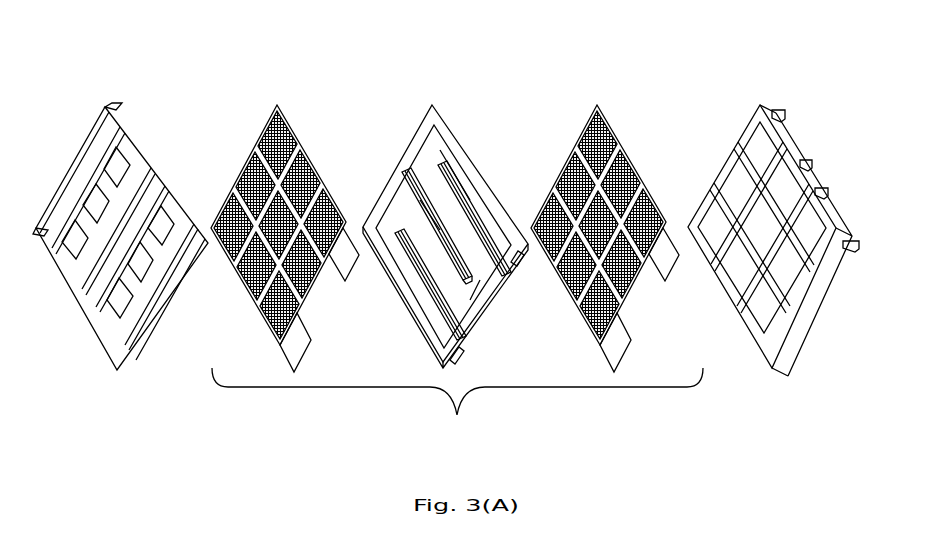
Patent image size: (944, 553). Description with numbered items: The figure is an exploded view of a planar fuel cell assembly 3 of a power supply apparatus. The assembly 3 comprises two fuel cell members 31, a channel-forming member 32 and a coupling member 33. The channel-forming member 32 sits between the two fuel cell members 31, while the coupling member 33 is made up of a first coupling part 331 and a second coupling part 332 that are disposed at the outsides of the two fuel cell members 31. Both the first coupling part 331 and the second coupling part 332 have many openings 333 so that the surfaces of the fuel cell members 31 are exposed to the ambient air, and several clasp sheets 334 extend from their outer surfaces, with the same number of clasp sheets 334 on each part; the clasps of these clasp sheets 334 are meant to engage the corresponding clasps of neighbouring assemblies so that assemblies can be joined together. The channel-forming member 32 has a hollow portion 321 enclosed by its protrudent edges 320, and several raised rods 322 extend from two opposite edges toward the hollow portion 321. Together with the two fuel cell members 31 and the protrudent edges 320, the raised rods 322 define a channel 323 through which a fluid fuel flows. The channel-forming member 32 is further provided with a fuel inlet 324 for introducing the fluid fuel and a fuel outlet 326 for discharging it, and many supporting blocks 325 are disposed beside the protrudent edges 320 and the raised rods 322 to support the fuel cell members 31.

The planar fuel cell assembly 3 is at (90, 52).
The fuel cell member 31 is at (272, 102).
The channel-forming member 32 is at (440, 108).
The coupling member 33 is at (457, 403).
The protrudent edges 320 is at (412, 146).
The hollow portion 321 is at (442, 157).
The raised rods 322 is at (399, 210).
The channel 323 is at (478, 292).
The fuel inlet 324 is at (517, 263).
The supporting blocks 325 is at (402, 172).
The fuel outlet 326 is at (462, 357).
The first coupling part 331 is at (170, 320).
The second coupling part 332 is at (752, 333).
The openings 333 is at (77, 240).
The clasp sheets 334 is at (68, 182).